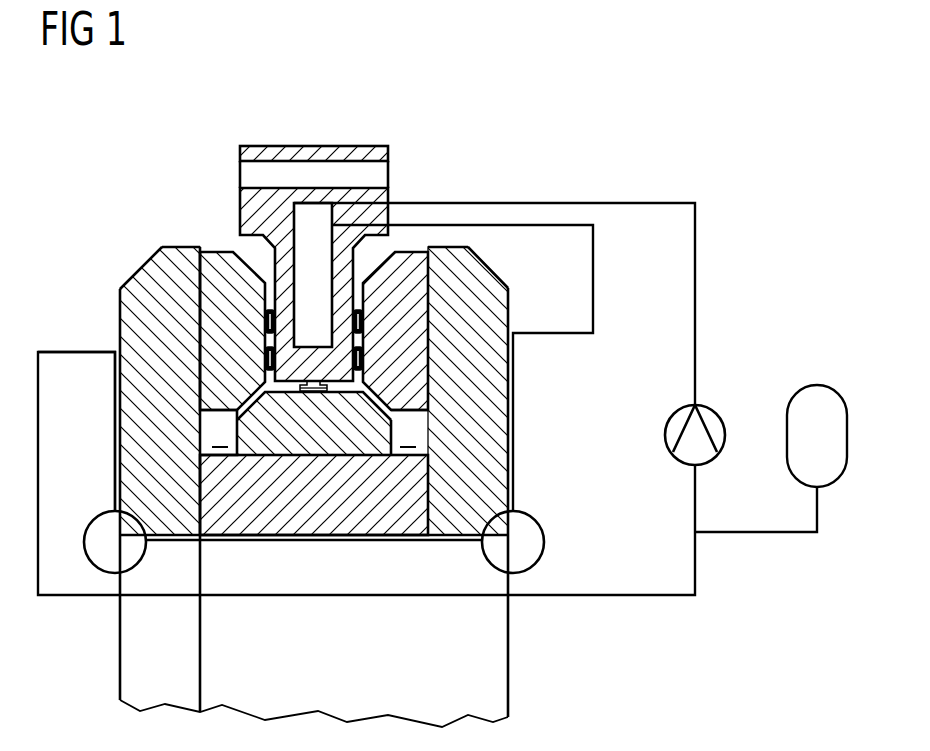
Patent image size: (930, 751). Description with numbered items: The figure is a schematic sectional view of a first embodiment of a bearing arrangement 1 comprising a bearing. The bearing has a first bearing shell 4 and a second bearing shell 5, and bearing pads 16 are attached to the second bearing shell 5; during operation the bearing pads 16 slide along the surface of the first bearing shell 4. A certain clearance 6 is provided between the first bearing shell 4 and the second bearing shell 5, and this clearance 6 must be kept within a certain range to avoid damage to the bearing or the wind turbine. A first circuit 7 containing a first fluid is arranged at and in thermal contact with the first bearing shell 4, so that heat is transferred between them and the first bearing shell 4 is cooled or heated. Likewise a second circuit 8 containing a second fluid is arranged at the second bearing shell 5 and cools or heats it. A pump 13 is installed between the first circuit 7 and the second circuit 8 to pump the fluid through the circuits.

The bearing arrangement 1 is at (84, 170).
The first bearing shell 4 is at (133, 427).
The second bearing shell 5 is at (327, 150).
The clearance 6 is at (200, 283).
The first circuit 7 is at (112, 473).
The second circuit 8 is at (447, 203).
The pump 13 is at (662, 435).
The bearing pads 16 is at (217, 357).